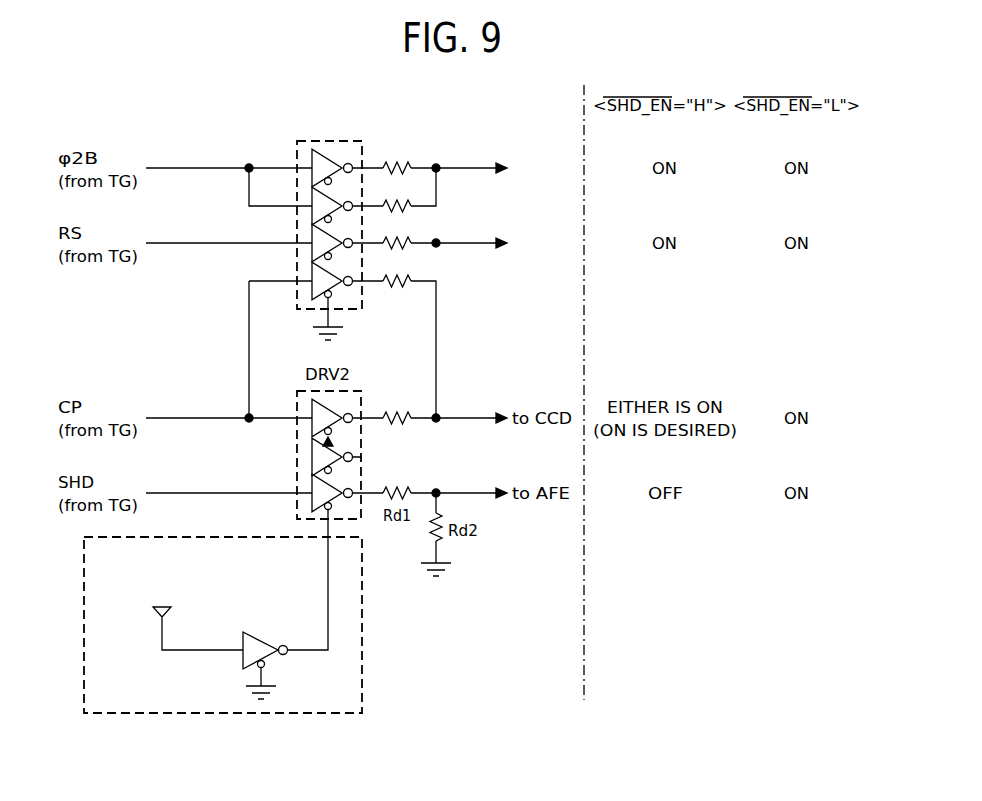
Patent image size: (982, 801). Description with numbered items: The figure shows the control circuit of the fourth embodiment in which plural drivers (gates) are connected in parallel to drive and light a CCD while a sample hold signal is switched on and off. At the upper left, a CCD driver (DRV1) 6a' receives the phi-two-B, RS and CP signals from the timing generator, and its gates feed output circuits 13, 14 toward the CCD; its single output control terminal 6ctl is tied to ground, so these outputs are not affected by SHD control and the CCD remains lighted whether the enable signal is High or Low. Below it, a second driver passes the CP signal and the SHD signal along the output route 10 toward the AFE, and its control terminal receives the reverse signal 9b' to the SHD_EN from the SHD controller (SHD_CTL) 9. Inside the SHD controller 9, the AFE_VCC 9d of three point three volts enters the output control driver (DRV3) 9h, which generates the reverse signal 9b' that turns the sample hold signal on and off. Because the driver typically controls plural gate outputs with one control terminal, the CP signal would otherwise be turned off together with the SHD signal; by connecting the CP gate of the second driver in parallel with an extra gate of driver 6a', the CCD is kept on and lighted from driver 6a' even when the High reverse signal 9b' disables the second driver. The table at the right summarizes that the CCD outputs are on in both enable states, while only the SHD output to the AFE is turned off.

The output circuit 13 is at (458, 167).
The output circuit 14 is at (458, 242).
The output route 10 is at (187, 491).
The CCD driver (DRV1) 6a' is at (351, 213).
The output control terminal 6ctl is at (337, 297).
The SHD controller (SHD_CTL) 9 is at (281, 612).
The reverse signal to the SHD_EN 9b' is at (292, 580).
The AFE_VCC 9d is at (169, 613).
The output control driver (DRV3) 9h is at (265, 654).